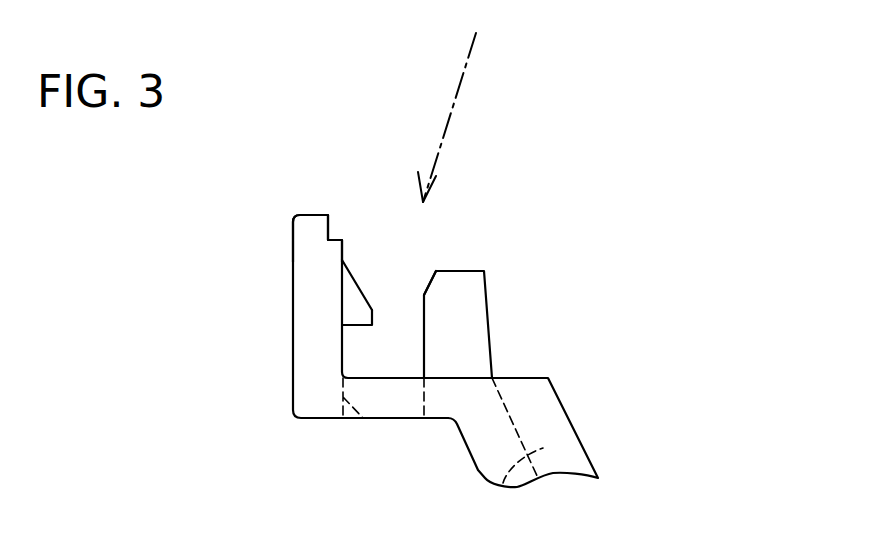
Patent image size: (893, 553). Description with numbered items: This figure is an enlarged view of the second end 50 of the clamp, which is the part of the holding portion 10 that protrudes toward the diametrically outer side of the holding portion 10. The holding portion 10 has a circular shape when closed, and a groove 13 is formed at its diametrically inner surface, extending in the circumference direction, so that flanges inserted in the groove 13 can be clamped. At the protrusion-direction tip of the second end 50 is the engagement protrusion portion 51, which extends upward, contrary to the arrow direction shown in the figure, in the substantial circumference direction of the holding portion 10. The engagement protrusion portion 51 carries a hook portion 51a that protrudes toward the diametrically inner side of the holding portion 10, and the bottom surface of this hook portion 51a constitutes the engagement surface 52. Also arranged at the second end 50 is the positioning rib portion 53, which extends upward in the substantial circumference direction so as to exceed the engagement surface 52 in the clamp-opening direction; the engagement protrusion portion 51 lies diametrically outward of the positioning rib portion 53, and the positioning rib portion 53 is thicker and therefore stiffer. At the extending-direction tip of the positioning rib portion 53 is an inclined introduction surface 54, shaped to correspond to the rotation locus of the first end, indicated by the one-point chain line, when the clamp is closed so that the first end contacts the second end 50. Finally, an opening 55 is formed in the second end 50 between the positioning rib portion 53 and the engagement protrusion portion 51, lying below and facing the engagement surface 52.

The second end 50 is at (290, 377).
The engagement protrusion portion 51 is at (307, 265).
The hook portion 51a is at (352, 302).
The engagement surface 52 is at (356, 326).
The positioning rib portion 53 is at (457, 297).
The introduction surface 54 is at (428, 281).
The opening 55 is at (363, 418).
The holding portion 10 is at (490, 449).
The groove 13 is at (503, 483).